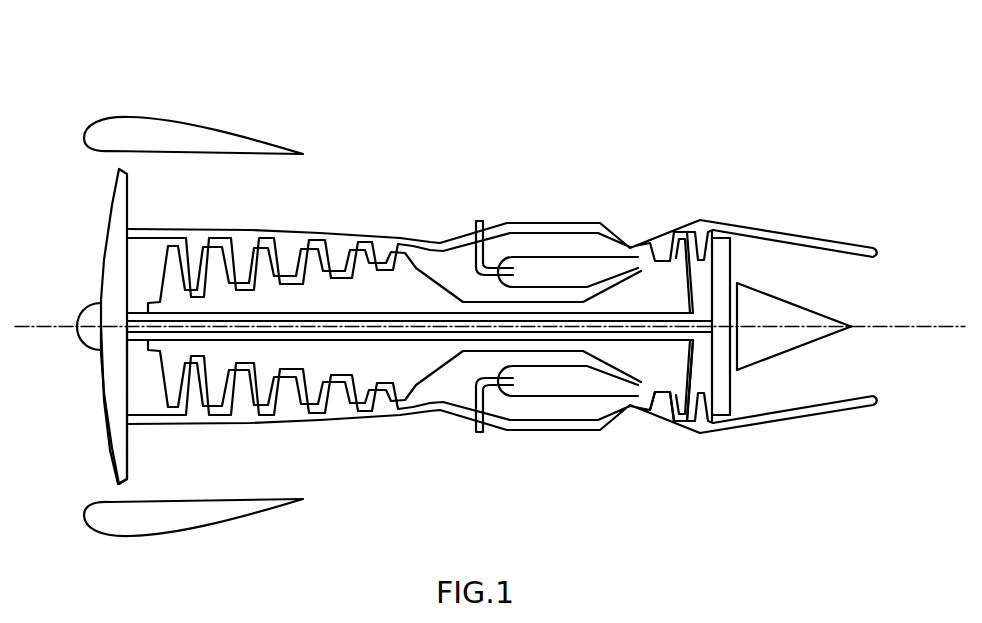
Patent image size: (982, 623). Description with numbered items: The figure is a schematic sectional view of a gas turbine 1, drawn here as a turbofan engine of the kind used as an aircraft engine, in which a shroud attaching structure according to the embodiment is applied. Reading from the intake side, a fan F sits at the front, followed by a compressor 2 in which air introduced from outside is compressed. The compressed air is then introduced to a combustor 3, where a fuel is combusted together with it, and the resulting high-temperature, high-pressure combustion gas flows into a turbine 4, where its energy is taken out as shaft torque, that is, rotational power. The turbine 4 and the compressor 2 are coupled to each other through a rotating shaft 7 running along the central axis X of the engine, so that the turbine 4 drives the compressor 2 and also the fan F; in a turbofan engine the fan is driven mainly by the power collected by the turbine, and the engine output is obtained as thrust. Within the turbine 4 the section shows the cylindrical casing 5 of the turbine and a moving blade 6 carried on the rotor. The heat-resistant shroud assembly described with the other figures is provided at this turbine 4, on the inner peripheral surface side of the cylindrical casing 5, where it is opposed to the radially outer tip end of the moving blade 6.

The gas turbine 1 is at (490, 272).
The compressor 2 is at (332, 227).
The combustor 3 is at (538, 256).
The turbine 4 is at (688, 222).
The cylindrical casing 5 is at (650, 420).
The moving blade 6 is at (682, 402).
The rotating shaft 7 is at (497, 342).
The fan F is at (112, 204).
The axis X is at (38, 345).